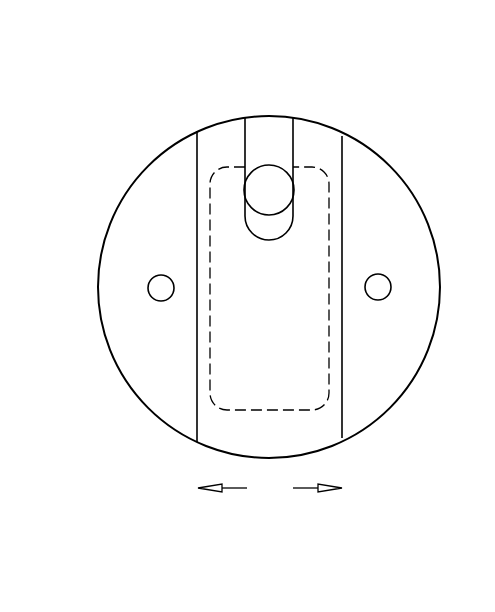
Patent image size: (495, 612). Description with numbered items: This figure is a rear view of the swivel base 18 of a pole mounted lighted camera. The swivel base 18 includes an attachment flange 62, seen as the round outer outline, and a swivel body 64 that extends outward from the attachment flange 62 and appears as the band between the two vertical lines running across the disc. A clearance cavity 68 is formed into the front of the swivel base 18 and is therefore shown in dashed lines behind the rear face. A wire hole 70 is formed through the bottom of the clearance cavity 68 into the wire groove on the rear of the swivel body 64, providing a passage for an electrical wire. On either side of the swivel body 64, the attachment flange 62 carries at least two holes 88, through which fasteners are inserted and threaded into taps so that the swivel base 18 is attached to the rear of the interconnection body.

The swivel base 18 is at (152, 133).
The attachment flange 62 is at (405, 178).
The swivel body 64 is at (295, 415).
The clearance cavity 68 is at (208, 373).
The wire hole 70 is at (269, 165).
The holes 88 is at (160, 285).